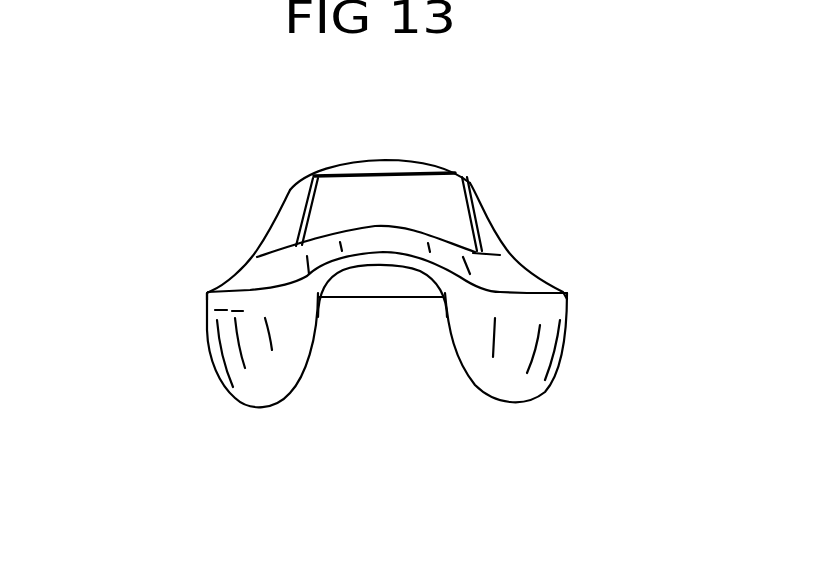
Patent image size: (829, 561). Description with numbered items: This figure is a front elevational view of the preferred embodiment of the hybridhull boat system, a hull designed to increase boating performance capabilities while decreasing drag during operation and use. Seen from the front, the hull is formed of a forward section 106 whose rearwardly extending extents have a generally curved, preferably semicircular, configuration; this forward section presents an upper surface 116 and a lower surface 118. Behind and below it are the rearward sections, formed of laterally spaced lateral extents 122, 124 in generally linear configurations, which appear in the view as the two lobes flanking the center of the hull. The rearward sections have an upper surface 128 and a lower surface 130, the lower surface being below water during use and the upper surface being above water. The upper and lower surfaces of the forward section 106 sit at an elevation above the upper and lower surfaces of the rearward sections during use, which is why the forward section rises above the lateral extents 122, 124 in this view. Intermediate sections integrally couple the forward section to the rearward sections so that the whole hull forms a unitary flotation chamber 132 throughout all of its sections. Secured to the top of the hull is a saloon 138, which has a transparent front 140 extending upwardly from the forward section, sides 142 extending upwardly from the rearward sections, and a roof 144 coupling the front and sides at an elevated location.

The forward section 106 is at (343, 463).
The upper surface of the forward section 116 is at (400, 240).
The lower surface of the forward section 118 is at (430, 450).
The lateral extent 122 is at (658, 388).
The lateral extent 124 is at (207, 355).
The upper surface of the rearward sections 128 is at (527, 289).
The lower surface of the rearward sections 130 is at (573, 495).
The unitary flotation chamber 132 is at (205, 305).
The saloon 138 is at (312, 180).
The transparent front 140 is at (410, 189).
The sides 142 is at (490, 228).
The roof 144 is at (390, 165).